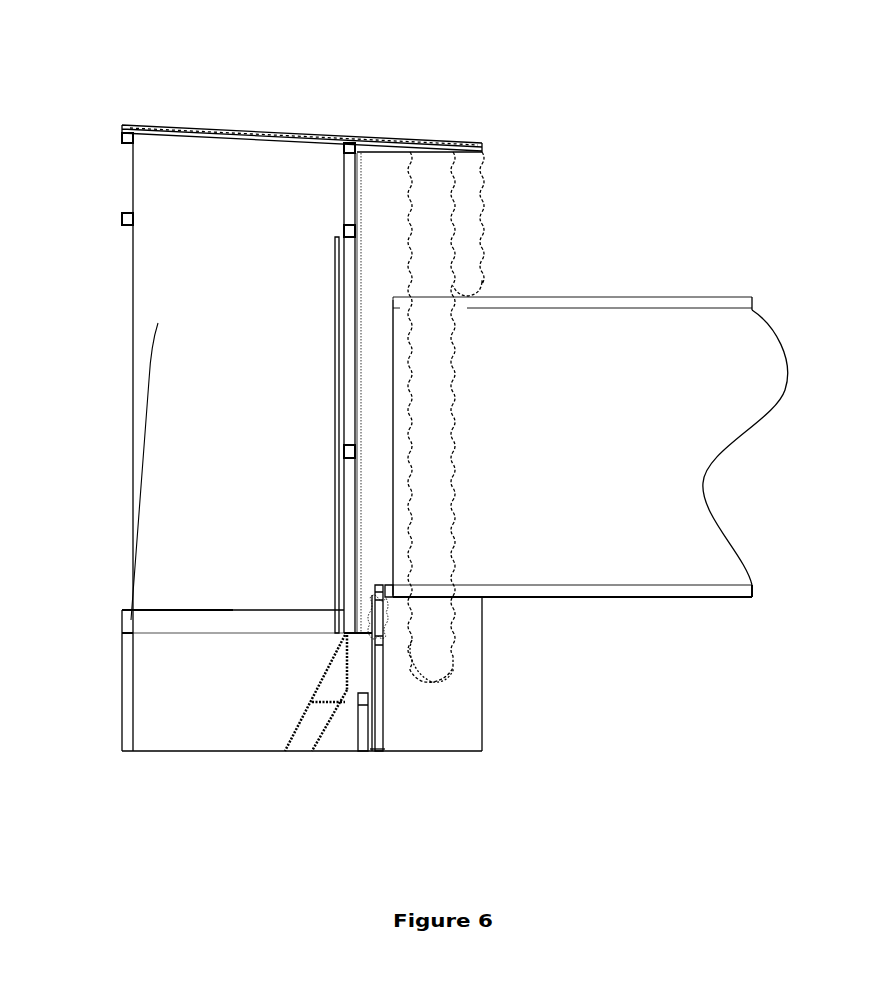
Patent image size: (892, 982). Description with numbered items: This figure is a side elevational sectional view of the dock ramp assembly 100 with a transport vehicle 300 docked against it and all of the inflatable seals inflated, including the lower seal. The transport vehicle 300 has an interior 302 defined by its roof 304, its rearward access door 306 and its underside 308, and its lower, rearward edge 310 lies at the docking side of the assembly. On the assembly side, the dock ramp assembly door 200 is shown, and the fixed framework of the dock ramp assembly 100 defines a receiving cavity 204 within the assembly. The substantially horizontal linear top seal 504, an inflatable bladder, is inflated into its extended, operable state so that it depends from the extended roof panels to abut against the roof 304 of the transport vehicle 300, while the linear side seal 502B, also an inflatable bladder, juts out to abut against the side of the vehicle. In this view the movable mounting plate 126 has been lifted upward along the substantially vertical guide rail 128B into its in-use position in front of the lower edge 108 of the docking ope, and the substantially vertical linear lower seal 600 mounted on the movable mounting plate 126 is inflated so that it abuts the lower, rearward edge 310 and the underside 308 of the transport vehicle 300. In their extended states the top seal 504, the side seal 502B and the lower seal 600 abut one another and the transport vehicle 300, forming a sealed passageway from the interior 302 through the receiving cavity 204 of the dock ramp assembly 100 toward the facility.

The dock ramp assembly 100 is at (459, 92).
The lower peripheral edge 108 is at (335, 608).
The movable mounting plate 126 is at (370, 638).
The guide rail 128B is at (378, 750).
The dock ramp assembly door 200 is at (335, 328).
The receiving cavity 204 is at (219, 219).
The transport vehicle 300 is at (586, 421).
The interior 302 is at (574, 423).
The roof 304 is at (556, 297).
The rearward access door 306 is at (393, 503).
The underside 308 is at (573, 597).
The lower, rearward edge 310 is at (392, 593).
The linear side seal 502B is at (434, 178).
The substantially horizontal linear top seal 504 is at (466, 236).
The substantially vertical linear lower seal 600 is at (397, 630).